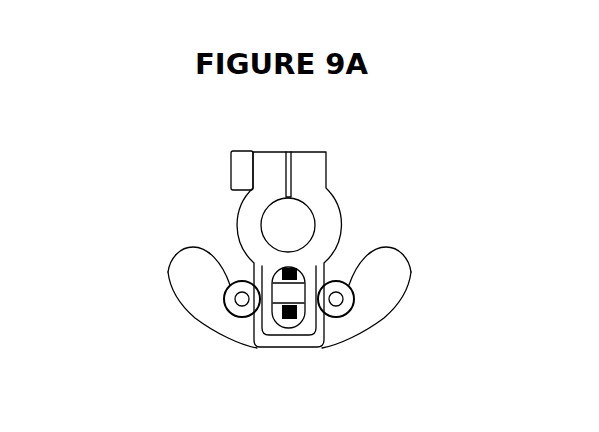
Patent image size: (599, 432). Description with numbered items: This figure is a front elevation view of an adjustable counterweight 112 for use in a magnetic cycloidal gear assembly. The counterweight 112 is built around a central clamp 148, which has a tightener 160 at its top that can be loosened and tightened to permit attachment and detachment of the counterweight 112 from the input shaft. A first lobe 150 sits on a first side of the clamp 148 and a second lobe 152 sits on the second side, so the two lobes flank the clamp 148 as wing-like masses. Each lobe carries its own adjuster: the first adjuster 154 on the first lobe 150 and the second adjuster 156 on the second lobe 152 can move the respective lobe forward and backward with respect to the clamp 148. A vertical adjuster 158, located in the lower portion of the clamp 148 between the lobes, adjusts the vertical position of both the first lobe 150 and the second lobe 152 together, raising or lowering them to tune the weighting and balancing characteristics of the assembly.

The counterweight 112 is at (131, 181).
The clamp 148 is at (327, 163).
The first lobe 150 is at (167, 273).
The second lobe 152 is at (400, 287).
The first adjuster 154 is at (229, 310).
The second adjuster 156 is at (349, 310).
The vertical adjuster 158 is at (290, 292).
The tightener 160 is at (230, 157).